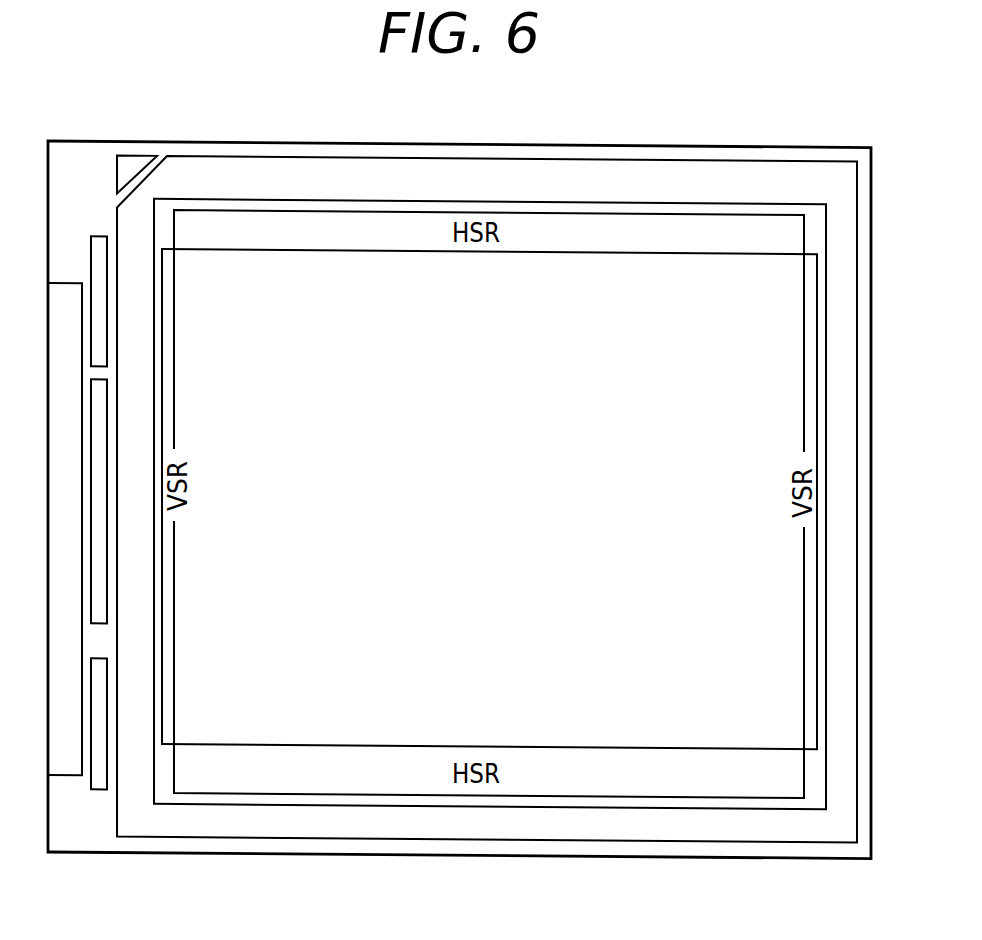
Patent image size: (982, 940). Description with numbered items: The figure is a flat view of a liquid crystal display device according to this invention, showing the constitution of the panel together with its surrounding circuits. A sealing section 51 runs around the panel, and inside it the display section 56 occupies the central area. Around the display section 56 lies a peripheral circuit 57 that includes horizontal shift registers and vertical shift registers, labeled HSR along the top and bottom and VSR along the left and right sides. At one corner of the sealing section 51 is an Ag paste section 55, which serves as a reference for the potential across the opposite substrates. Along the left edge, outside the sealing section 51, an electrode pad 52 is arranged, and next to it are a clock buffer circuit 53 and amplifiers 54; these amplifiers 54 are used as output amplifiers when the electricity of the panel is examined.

The sealing section 51 is at (278, 168).
The electrode pad 52 is at (72, 418).
The clock buffer circuit 53 is at (102, 597).
The amplifiers 54 is at (102, 295).
The Ag paste section 55 is at (130, 157).
The display section 56 is at (367, 730).
The peripheral circuit 57 is at (808, 697).